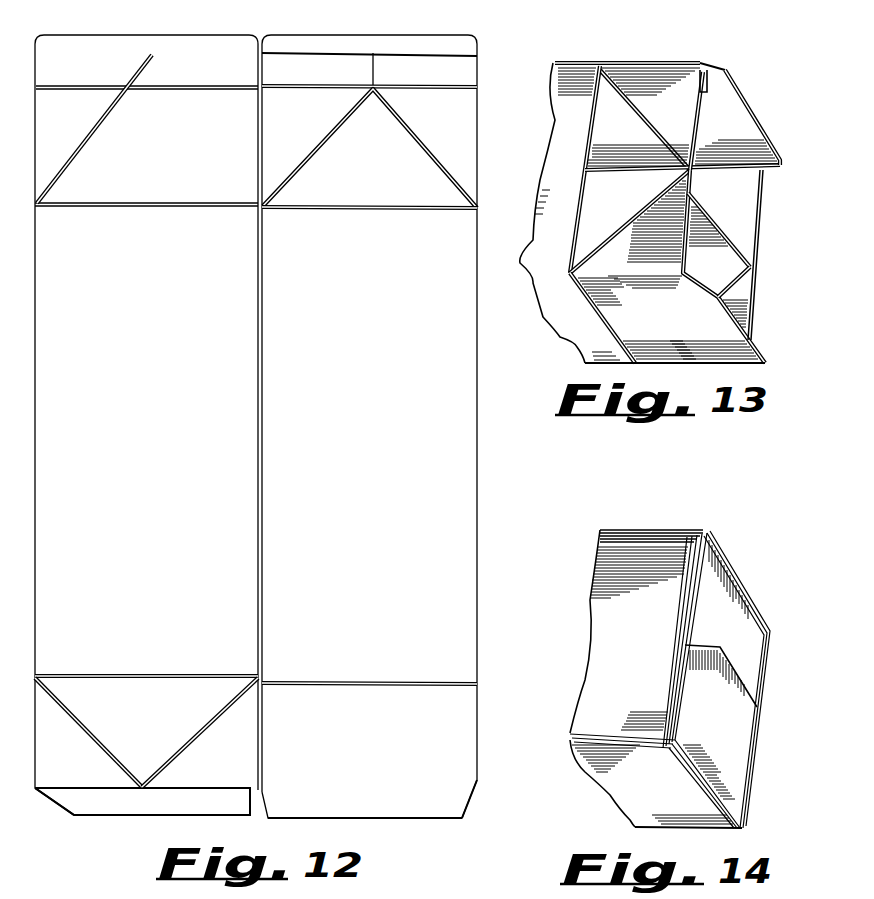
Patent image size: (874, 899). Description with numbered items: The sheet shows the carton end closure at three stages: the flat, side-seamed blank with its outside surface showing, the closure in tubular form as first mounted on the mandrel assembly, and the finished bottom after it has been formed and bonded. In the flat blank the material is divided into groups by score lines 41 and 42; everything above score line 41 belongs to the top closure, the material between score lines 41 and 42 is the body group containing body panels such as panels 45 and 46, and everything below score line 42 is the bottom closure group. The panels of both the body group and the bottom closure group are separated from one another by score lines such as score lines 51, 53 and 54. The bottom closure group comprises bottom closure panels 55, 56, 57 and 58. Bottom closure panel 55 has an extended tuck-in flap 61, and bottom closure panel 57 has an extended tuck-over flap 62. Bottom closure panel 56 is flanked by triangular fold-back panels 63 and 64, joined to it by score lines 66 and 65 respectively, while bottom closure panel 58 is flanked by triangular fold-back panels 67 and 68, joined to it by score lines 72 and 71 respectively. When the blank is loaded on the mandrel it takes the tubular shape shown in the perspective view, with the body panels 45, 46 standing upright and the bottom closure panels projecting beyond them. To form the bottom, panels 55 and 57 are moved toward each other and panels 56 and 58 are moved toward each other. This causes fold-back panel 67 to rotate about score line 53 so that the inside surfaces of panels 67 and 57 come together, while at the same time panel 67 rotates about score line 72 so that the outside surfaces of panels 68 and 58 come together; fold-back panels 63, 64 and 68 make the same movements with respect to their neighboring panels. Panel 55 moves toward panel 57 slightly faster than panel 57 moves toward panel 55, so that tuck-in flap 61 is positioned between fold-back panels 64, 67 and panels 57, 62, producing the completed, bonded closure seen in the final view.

In FIG. 12, the score line 41 is at (357, 212).
In FIG. 12, the score line 42 is at (352, 683).
In FIG. 13, the body panel 45 is at (566, 302).
In FIG. 14, the body panel 45 is at (635, 787).
In FIG. 13, the body panel 46 is at (572, 79).
In FIG. 14, the body panel 46 is at (625, 602).
In FIG. 12, the score line 51 is at (477, 468).
In FIG. 12, the score line 53 is at (35, 330).
In FIG. 13, the score line 53 is at (598, 278).
In FIG. 12, the score line 54 is at (258, 403).
In FIG. 12, the bottom closure panel 55 is at (408, 785).
In FIG. 13, the bottom closure panel 55 is at (718, 126).
In FIG. 14, the bottom closure panel 55 is at (712, 572).
In FIG. 13, the bottom closure panel 56 is at (716, 272).
In FIG. 13, the bottom closure panel 57 is at (580, 320).
In FIG. 14, the bottom closure panel 57 is at (724, 740).
In FIG. 12, the bottom closure panel 58 is at (135, 750).
In FIG. 13, the bottom closure panel 58 is at (606, 168).
In FIG. 12, the tuck-in flap 61 is at (386, 812).
In FIG. 13, the tuck-in flap 61 is at (727, 90).
In FIG. 12, the tuck-over flap 62 is at (214, 812).
In FIG. 13, the tuck-over flap 62 is at (748, 355).
In FIG. 14, the tuck-over flap 62 is at (727, 667).
In FIG. 13, the triangular fold-back panel 63 is at (728, 197).
In FIG. 13, the triangular fold-back panel 64 is at (740, 312).
In FIG. 13, the score line 65 is at (742, 298).
In FIG. 13, the score line 66 is at (726, 230).
In FIG. 12, the triangular fold-back panel 67 is at (55, 764).
In FIG. 13, the triangular fold-back panel 67 is at (622, 245).
In FIG. 12, the triangular fold-back panel 68 is at (206, 767).
In FIG. 13, the triangular fold-back panel 68 is at (640, 80).
In FIG. 12, the score line 71 is at (222, 712).
In FIG. 13, the score line 71 is at (622, 78).
In FIG. 12, the score line 72 is at (64, 710).
In FIG. 13, the score line 72 is at (631, 222).